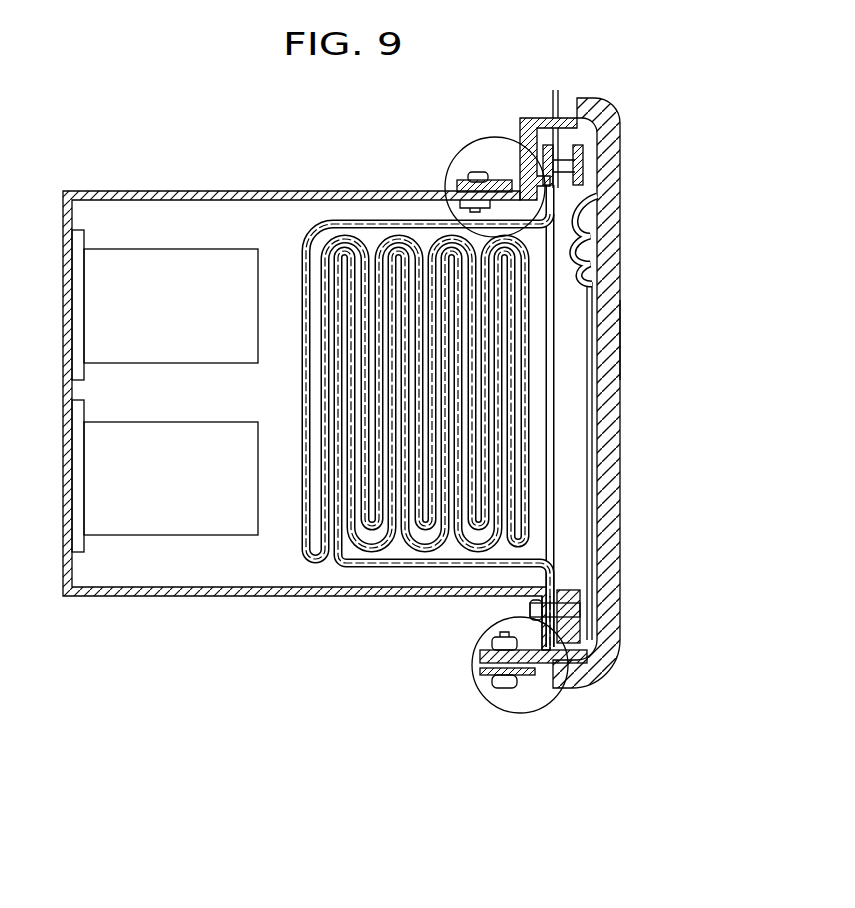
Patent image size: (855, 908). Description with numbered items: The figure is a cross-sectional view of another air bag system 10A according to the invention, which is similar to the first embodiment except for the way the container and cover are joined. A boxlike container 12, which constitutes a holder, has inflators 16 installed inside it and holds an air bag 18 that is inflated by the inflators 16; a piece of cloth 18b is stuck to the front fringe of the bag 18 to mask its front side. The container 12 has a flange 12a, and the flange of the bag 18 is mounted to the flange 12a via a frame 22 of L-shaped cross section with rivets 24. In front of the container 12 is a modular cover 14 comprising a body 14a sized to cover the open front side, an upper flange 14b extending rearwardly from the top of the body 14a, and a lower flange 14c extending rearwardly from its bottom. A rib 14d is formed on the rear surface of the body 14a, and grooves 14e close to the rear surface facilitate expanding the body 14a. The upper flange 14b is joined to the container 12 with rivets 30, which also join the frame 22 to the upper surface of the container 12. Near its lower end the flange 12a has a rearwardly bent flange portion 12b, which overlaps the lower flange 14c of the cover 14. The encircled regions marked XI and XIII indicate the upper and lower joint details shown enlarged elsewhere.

The air bag system 10A is at (737, 69).
The container 12 is at (178, 190).
The flange 12a is at (557, 90).
The flange portion 12b is at (482, 652).
The modular cover 14 is at (622, 178).
The body 14a is at (622, 335).
The upper flange 14b is at (548, 128).
The lower flange 14c is at (490, 650).
The rib 14d is at (583, 462).
The grooves 14e is at (592, 227).
The inflators 16 is at (185, 250).
The air bag 18 is at (300, 547).
The piece of cloth 18b is at (568, 295).
The frame 22 is at (578, 112).
The rivets 24 is at (583, 160).
The rivets 30 is at (496, 170).
The section line XI is at (465, 162).
The section line XIII is at (470, 680).